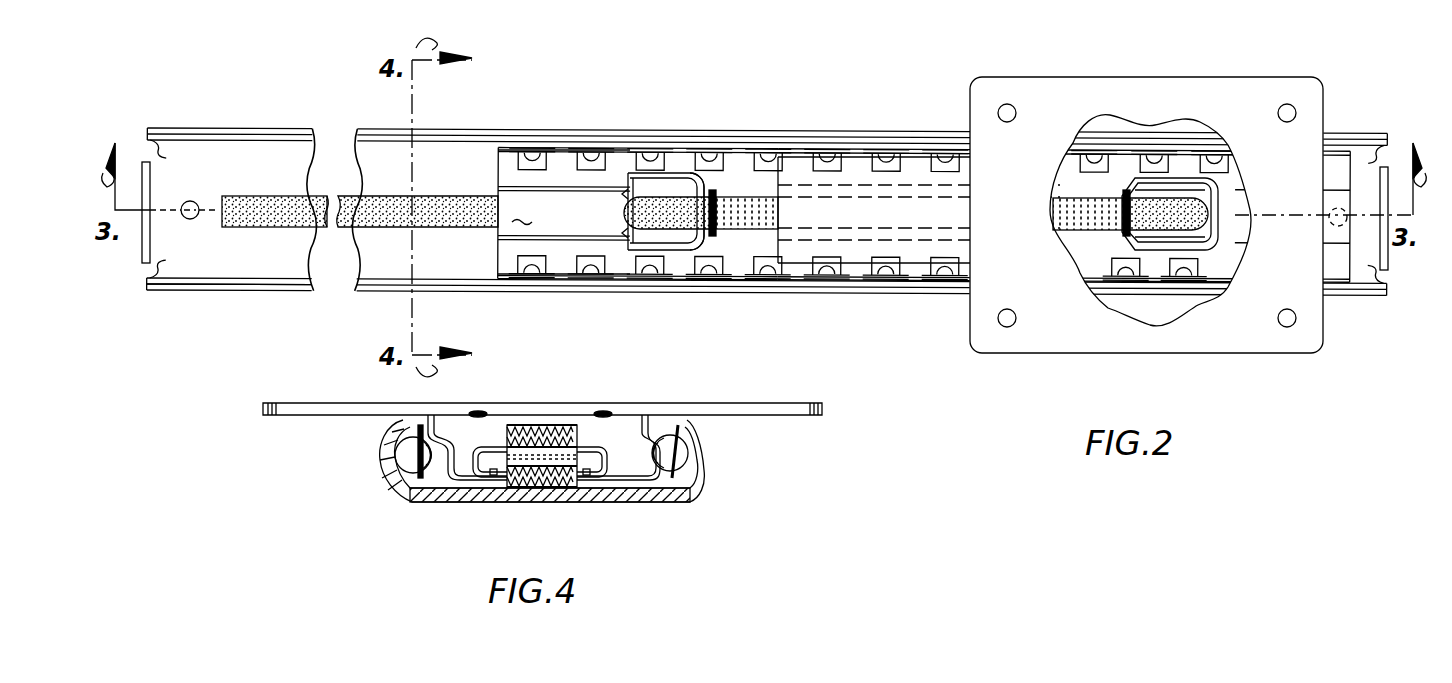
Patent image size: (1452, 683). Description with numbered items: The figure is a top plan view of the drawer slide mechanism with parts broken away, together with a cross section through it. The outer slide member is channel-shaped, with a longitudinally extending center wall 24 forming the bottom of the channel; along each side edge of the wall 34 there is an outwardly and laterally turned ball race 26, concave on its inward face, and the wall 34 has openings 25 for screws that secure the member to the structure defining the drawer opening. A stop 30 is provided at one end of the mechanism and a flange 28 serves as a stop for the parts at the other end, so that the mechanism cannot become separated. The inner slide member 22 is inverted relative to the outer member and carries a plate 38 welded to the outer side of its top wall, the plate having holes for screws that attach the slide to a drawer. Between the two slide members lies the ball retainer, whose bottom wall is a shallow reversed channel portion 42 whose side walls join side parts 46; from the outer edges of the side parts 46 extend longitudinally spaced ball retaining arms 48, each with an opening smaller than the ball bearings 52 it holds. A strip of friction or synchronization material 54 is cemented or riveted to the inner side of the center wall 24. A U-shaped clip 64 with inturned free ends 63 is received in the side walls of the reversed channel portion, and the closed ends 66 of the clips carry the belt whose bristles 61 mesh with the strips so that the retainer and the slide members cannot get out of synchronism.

In FIG. 2, the inner slide member 22 is at (892, 153).
In FIG. 4, the inner slide member 22 is at (674, 425).
In FIG. 2, the center wall 24 is at (378, 178).
In FIG. 2, the openings 25 is at (190, 201).
In FIG. 2, the ball race 26 is at (230, 269).
In FIG. 2, the flange 28 is at (143, 182).
In FIG. 2, the end plate 30 is at (1385, 173).
In FIG. 4, the wall 34 is at (477, 447).
In FIG. 2, the plate 38 is at (1260, 100).
In FIG. 2, the reversed channel portion 42 is at (545, 196).
In FIG. 2, the side parts 46 is at (510, 177).
In FIG. 2, the ball retaining arms 48 is at (610, 144).
In FIG. 4, the ball bearings 52 is at (406, 455).
In FIG. 2, the strip of friction or synchronization material 54 is at (362, 230).
In FIG. 4, the bristles 61 is at (565, 428).
In FIG. 2, the inturned free ends 63 is at (632, 232).
In FIG. 4, the inturned free ends 63 is at (493, 478).
In FIG. 4, the clip 64 is at (610, 450).
In FIG. 4, the closed ends 66 is at (495, 452).